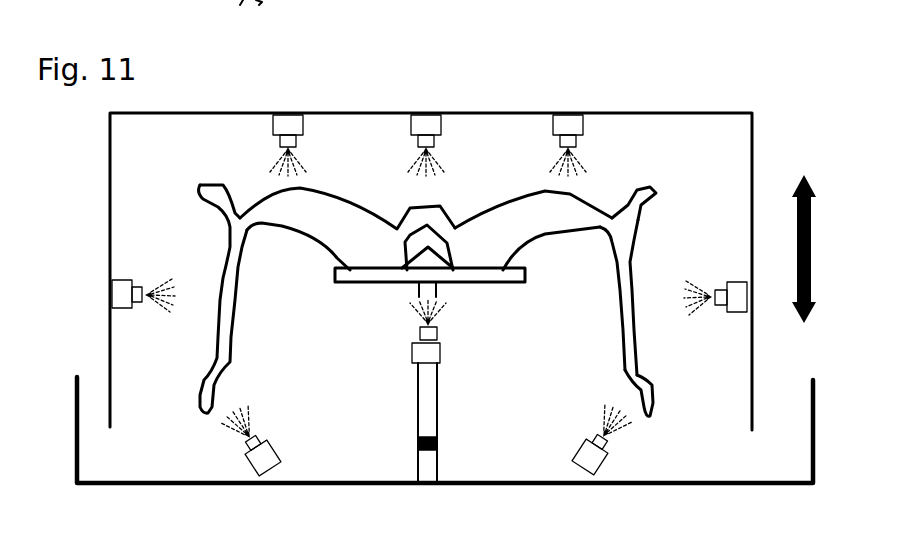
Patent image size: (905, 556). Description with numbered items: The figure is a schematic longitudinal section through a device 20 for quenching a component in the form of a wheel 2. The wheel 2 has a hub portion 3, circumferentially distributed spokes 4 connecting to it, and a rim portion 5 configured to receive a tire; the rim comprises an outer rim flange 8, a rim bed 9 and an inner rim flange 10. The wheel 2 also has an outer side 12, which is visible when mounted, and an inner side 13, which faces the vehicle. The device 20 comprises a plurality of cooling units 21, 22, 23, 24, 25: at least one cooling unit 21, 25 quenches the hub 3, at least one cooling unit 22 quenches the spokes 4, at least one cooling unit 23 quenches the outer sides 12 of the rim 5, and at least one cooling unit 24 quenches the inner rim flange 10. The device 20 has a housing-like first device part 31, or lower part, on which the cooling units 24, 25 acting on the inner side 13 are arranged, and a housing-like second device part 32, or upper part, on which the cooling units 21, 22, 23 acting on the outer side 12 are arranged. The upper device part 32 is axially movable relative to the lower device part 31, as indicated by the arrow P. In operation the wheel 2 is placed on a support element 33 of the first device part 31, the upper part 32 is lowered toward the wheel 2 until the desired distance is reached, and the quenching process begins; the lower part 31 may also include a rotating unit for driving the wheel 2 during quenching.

The wheel 2 is at (347, 165).
The hub portion 3 is at (446, 190).
The spokes 4 is at (540, 206).
The rim portion 5 is at (211, 273).
The outer rim flange 8 is at (663, 183).
The rim bed 9 is at (630, 306).
The inner rim flange 10 is at (654, 407).
The outer side 12 is at (490, 165).
The inner side 13 is at (287, 266).
The quenching device 20 is at (675, 83).
The cooling unit 21 is at (428, 122).
The cooling unit 22 is at (571, 123).
The cooling unit 23 is at (740, 298).
The cooling unit 24 is at (277, 452).
The cooling unit 25 is at (438, 353).
The first device part 31 is at (345, 488).
The second device part 32 is at (201, 111).
The support element 33 is at (449, 436).
The arrow P is at (812, 253).